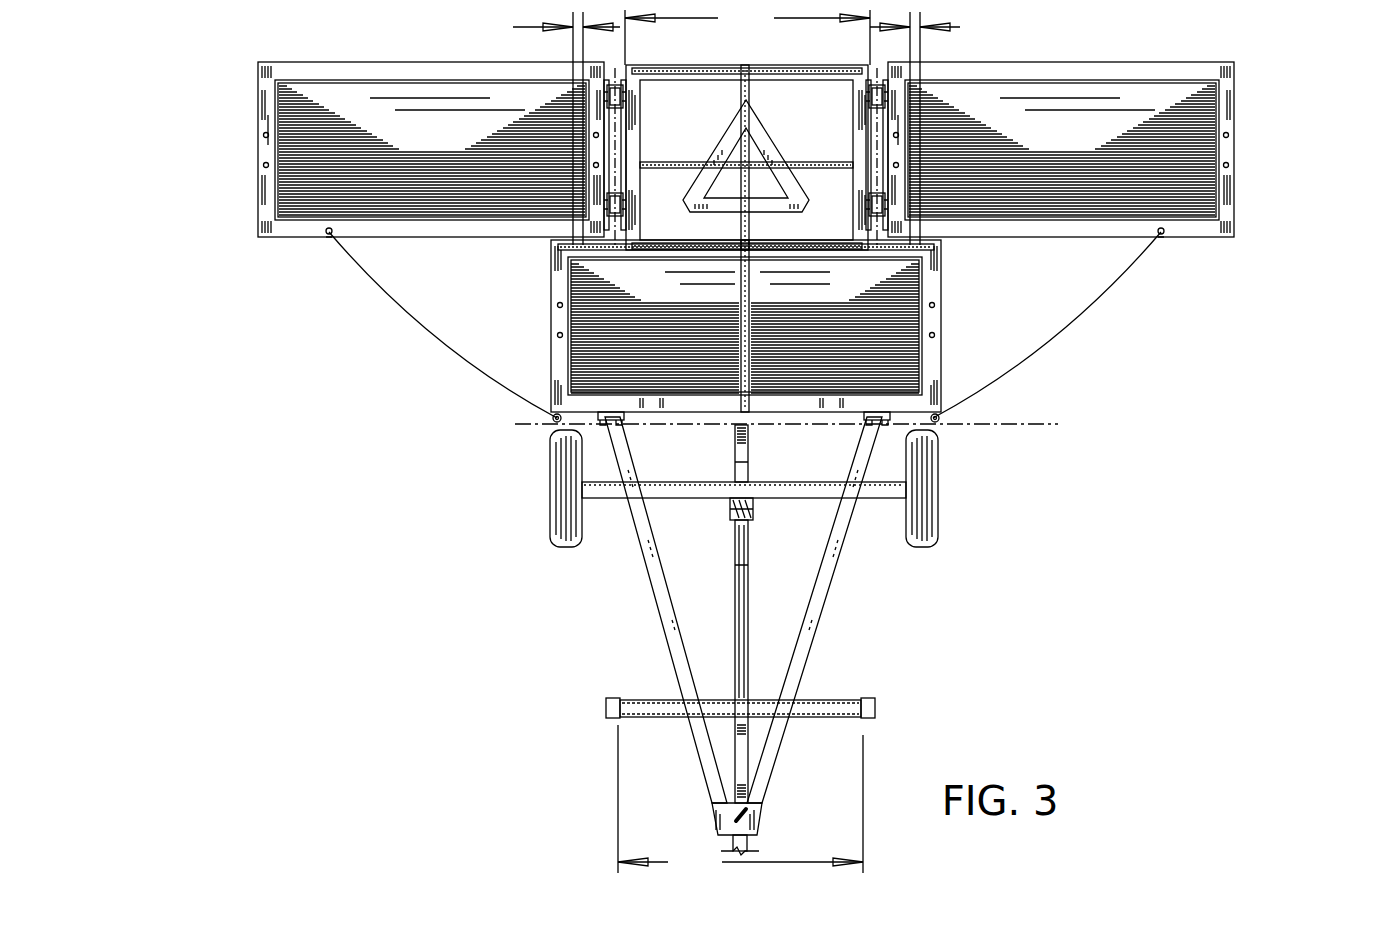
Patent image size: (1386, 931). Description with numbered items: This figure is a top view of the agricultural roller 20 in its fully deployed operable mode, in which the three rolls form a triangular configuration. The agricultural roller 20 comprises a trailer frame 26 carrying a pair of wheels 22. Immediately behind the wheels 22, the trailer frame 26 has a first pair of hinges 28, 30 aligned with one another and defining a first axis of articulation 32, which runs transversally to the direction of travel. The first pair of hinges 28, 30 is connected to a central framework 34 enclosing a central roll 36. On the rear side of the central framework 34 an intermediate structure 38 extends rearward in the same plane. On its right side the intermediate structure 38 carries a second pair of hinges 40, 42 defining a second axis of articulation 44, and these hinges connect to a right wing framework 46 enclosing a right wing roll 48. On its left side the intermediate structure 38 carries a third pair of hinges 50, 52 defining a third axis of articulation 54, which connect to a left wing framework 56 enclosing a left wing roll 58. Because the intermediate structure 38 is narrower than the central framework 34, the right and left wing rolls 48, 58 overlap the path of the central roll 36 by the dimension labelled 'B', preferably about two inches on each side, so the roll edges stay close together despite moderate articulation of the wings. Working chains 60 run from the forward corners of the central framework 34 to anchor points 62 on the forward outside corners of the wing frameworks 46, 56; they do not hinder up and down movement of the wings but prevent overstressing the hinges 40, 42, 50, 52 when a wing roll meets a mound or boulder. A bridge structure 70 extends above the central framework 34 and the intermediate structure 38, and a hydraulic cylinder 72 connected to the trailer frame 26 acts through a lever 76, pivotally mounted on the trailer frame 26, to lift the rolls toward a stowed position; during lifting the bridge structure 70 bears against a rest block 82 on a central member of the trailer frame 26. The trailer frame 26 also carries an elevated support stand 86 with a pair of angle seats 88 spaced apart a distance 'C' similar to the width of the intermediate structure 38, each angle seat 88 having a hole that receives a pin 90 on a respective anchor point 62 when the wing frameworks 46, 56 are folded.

The agricultural roller 20 is at (366, 492).
The pair of wheels 22 is at (556, 540).
The trailer frame 26 is at (840, 565).
The first hinge 28 is at (553, 426).
The first hinge 30 is at (937, 426).
The first axis of articulation 32 is at (1045, 426).
The central framework 34 is at (940, 365).
The central roll 36 is at (905, 298).
The intermediate structure 38 is at (676, 65).
The second hinge 40 is at (870, 104).
The second hinge 42 is at (868, 205).
The second axis of articulation 44 is at (878, 62).
The right wing framework 46 is at (1234, 190).
The right wing roll 48 is at (1210, 117).
The third hinge 50 is at (620, 104).
The third hinge 52 is at (618, 200).
The third axis of articulation 54 is at (614, 62).
The left wing framework 56 is at (258, 183).
The left wing roll 58 is at (292, 119).
The working chains 60 is at (421, 318).
The anchor points 62 is at (762, 279).
The bridge structure 70 is at (742, 286).
The hydraulic cylinder 72 is at (738, 620).
The lever 76 is at (730, 508).
The rest block 82 is at (735, 468).
The elevated support stand 86 is at (648, 702).
The angle seat 88 is at (870, 700).
The pin 90 is at (329, 238).